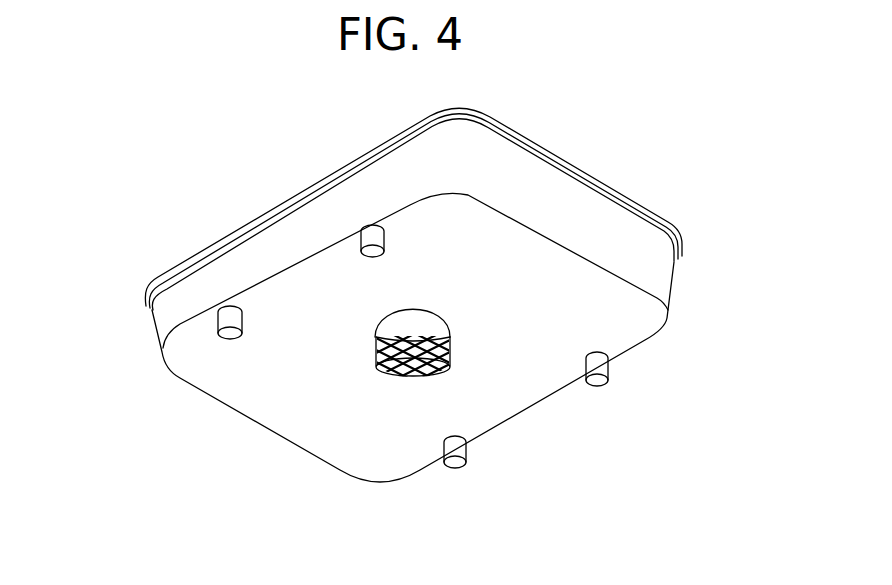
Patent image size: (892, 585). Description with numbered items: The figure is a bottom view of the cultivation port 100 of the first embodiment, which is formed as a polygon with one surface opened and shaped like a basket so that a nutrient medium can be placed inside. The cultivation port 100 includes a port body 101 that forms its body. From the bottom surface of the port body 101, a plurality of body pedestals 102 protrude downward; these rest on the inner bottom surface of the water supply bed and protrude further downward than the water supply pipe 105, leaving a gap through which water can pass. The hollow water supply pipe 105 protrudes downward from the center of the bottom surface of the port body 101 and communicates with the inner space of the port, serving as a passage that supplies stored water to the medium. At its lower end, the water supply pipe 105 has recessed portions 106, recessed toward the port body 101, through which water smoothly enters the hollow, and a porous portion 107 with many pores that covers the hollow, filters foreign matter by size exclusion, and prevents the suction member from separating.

The cultivation port 100 is at (157, 131).
The port body 101 is at (168, 318).
The body pedestal 102 is at (459, 468).
The water supply pipe 105 is at (452, 337).
The recessed portion 106 is at (375, 335).
The porous portion 107 is at (430, 377).